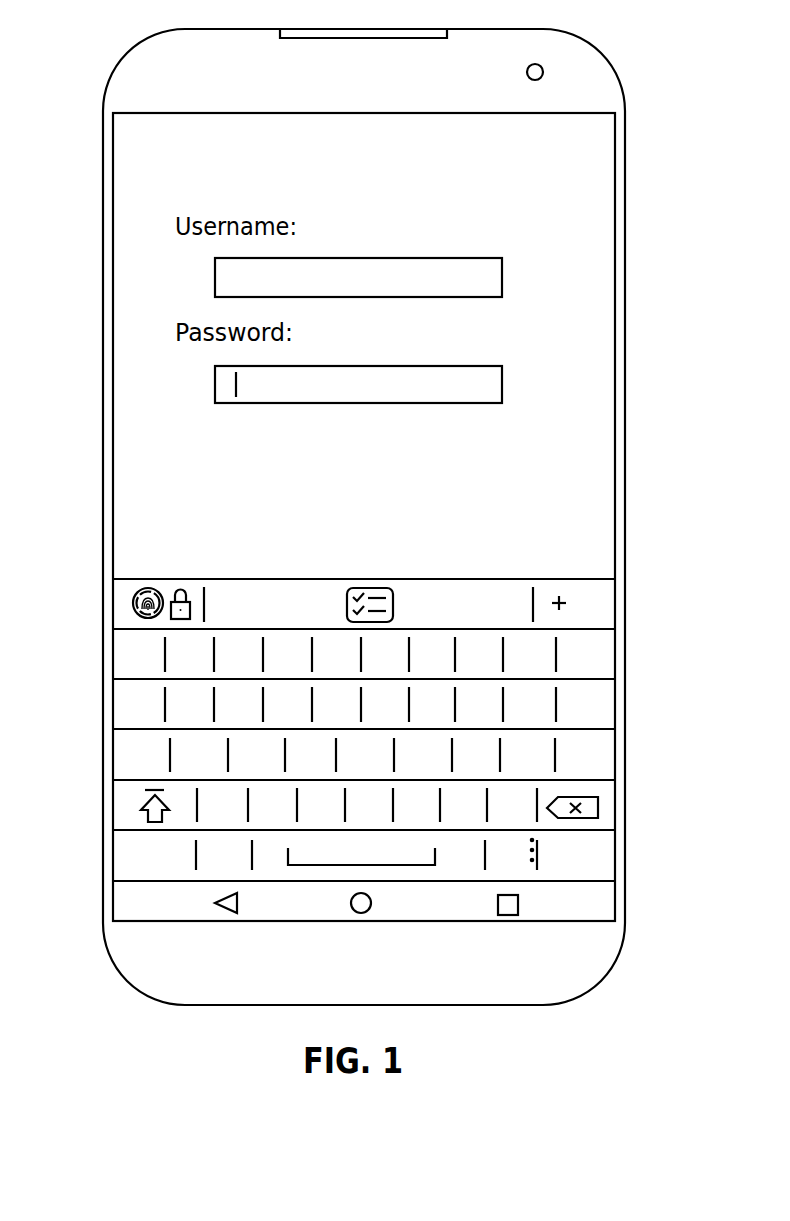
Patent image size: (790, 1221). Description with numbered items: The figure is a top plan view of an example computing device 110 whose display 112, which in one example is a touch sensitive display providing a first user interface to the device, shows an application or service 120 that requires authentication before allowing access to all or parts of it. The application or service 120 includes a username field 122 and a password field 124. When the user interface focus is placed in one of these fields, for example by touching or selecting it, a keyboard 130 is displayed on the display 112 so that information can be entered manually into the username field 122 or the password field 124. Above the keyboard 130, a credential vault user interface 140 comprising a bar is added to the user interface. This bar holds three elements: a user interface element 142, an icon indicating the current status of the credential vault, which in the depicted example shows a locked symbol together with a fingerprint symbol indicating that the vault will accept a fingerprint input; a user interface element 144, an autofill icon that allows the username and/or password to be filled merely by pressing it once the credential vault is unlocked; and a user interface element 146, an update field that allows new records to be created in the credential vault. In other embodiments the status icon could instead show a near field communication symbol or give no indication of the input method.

The computing device 110 is at (622, 157).
The display 112 is at (602, 213).
The application or service 120 is at (133, 178).
The username field 122 is at (485, 272).
The password field 124 is at (485, 390).
The keyboard 130 is at (88, 633).
The credential vault user interface 140 is at (88, 580).
The user interface element 142 is at (153, 583).
The user interface element 144 is at (370, 586).
The user interface element 146 is at (557, 585).